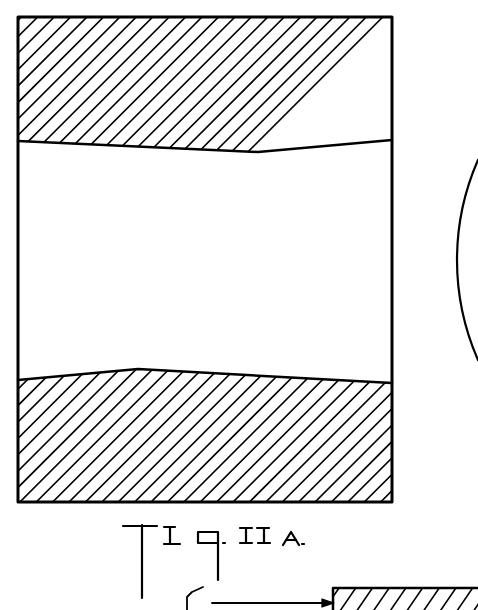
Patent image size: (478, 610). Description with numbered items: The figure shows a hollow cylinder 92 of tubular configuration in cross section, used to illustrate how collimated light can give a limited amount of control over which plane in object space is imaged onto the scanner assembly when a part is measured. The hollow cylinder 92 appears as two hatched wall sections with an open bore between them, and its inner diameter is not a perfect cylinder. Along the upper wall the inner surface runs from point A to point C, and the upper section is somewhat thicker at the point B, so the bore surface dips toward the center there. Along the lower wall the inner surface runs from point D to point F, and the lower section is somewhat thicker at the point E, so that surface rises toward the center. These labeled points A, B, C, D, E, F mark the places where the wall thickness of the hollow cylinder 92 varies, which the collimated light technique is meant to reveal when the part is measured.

The hollow cylinder 92 is at (373, 82).
The point A is at (20, 143).
The point B is at (256, 153).
The point C is at (392, 142).
The point D is at (20, 380).
The point E is at (140, 369).
The point F is at (392, 383).